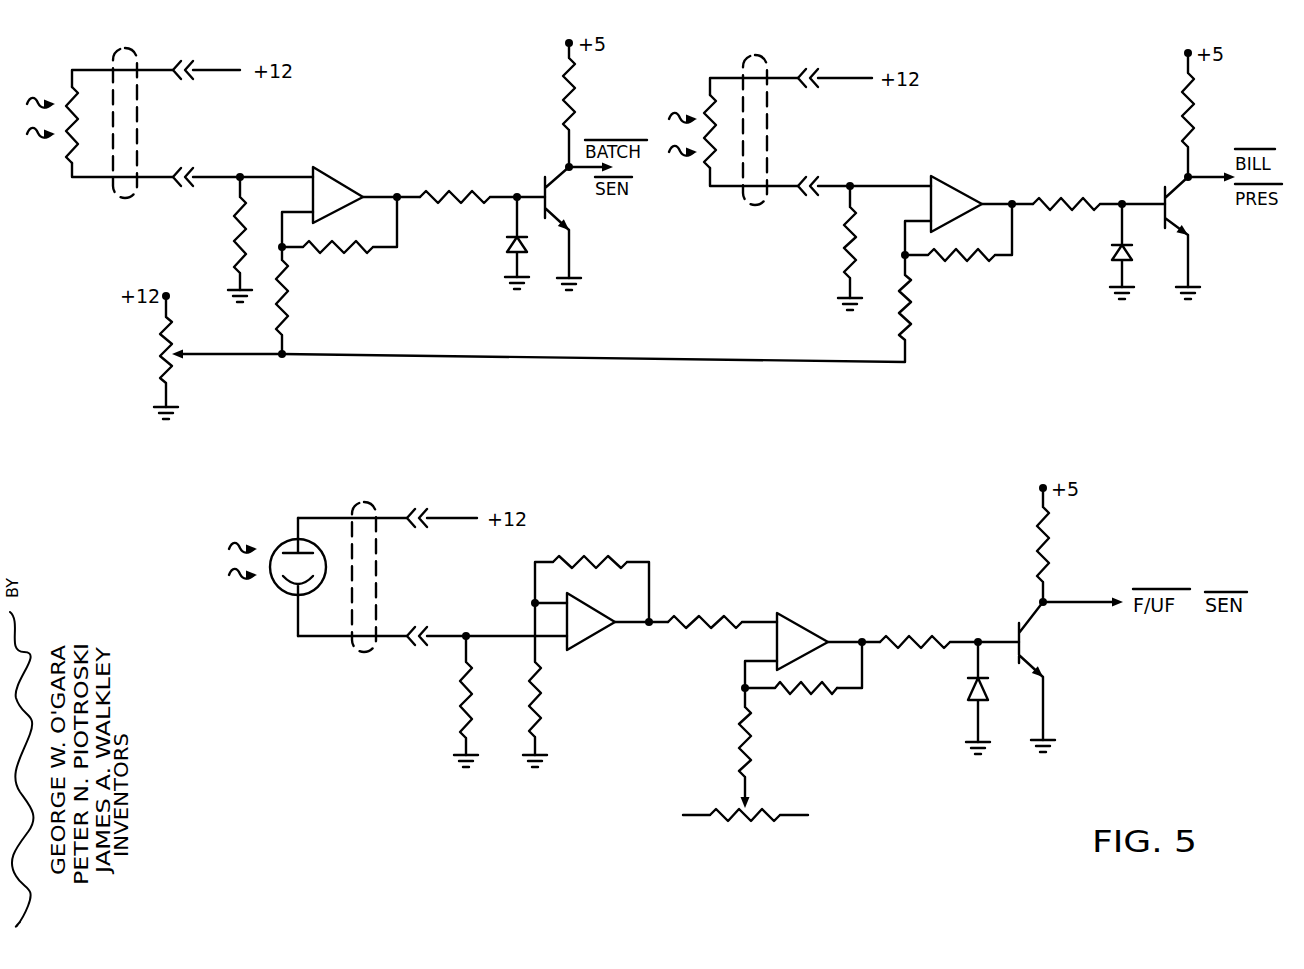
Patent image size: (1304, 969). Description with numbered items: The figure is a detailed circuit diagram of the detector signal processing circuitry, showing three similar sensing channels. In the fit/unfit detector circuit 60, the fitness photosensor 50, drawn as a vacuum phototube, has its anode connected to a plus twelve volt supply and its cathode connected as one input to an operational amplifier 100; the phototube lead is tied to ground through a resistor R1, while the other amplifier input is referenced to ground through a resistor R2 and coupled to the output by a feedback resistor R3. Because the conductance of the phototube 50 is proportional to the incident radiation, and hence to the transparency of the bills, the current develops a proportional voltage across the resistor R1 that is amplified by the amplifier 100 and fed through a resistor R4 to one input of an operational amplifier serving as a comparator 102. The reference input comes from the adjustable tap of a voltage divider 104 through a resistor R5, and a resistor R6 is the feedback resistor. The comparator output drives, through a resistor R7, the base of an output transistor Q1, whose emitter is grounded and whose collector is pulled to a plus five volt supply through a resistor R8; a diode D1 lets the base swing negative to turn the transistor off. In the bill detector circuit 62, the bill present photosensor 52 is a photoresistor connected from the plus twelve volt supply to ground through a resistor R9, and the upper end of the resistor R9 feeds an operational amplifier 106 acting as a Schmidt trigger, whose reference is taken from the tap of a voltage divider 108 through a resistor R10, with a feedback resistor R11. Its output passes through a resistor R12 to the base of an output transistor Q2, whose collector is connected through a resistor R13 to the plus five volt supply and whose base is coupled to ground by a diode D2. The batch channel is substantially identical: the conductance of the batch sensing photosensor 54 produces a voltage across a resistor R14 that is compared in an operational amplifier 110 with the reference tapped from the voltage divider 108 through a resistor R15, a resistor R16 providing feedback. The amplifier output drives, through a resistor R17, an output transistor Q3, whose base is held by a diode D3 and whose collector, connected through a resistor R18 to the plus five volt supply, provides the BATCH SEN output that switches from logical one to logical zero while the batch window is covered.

The batch sensing photosensor 54 is at (72, 155).
The operational amplifier 110 is at (334, 180).
The resistor R14 is at (238, 205).
The resistor R15 is at (286, 329).
The feedback resistor R16 is at (356, 250).
The resistor R17 is at (470, 197).
The diode D3 is at (505, 247).
The output transistor Q3 is at (558, 212).
The resistor R18 is at (570, 102).
The voltage divider 108 is at (158, 340).
The bill present photosensor 52 is at (708, 168).
The bill detector circuit 62 is at (975, 165).
The operational amplifier 106 is at (968, 199).
The resistor R9 is at (840, 264).
The resistor R10 is at (908, 325).
The feedback resistor R11 is at (968, 255).
The resistor R12 is at (1076, 204).
The diode D2 is at (1109, 247).
The output transistor Q2 is at (1178, 222).
The resistor R13 is at (1196, 116).
The fitness photosensor 50 is at (281, 590).
The resistor R1 is at (460, 720).
The resistor R2 is at (538, 724).
The feedback resistor R3 is at (608, 562).
The operational amplifier 100 is at (584, 639).
The resistor R4 is at (719, 622).
The fit/unfit detector circuit 60 is at (716, 578).
The comparator 102 is at (795, 627).
The feedback resistor R6 is at (814, 688).
The resistor R5 is at (748, 770).
The voltage divider 104 is at (767, 822).
The resistor R7 is at (923, 638).
The diode D1 is at (968, 690).
The output transistor Q1 is at (1032, 651).
The resistor R8 is at (1048, 529).